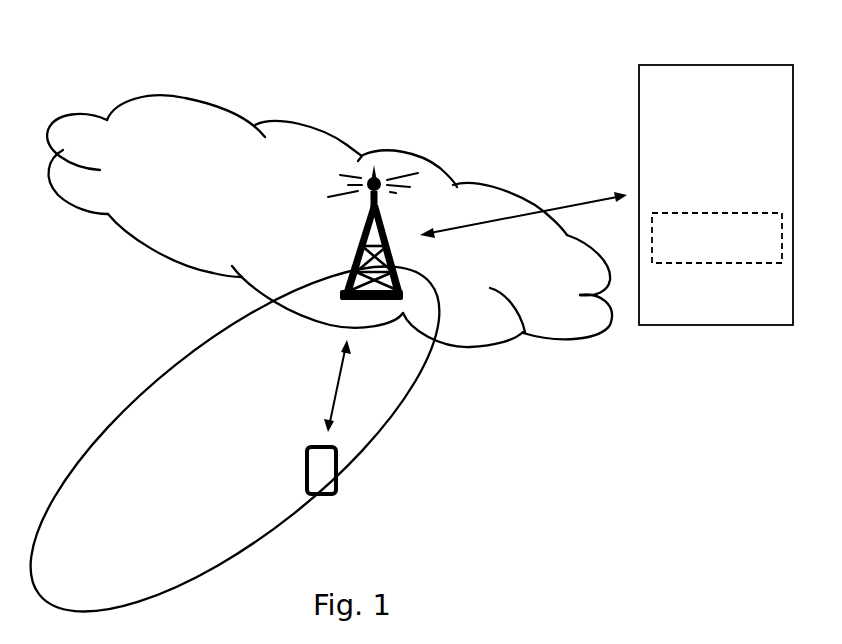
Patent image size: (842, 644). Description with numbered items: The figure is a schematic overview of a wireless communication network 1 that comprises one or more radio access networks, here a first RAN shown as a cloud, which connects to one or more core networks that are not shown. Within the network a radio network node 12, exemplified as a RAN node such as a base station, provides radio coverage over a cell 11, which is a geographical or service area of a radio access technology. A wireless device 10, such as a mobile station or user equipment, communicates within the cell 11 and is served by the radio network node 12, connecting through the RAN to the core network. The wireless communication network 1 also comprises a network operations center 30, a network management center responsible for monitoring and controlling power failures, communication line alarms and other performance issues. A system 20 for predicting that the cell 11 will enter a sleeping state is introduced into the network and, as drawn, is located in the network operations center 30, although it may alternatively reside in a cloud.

The wireless communication network 1 is at (110, 57).
The wireless device 10 is at (313, 471).
The cell 11 is at (173, 514).
The radio network node 12 is at (366, 247).
The system 20 is at (728, 218).
The network operations center 30 is at (683, 74).